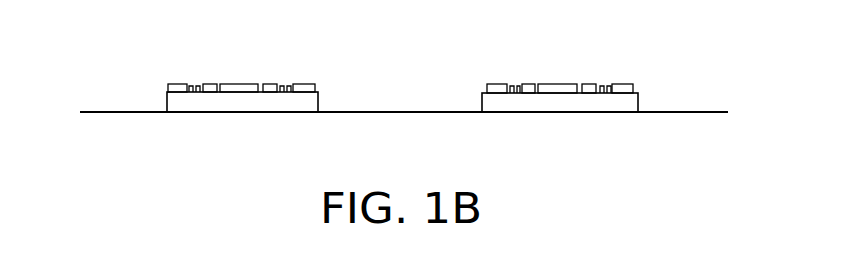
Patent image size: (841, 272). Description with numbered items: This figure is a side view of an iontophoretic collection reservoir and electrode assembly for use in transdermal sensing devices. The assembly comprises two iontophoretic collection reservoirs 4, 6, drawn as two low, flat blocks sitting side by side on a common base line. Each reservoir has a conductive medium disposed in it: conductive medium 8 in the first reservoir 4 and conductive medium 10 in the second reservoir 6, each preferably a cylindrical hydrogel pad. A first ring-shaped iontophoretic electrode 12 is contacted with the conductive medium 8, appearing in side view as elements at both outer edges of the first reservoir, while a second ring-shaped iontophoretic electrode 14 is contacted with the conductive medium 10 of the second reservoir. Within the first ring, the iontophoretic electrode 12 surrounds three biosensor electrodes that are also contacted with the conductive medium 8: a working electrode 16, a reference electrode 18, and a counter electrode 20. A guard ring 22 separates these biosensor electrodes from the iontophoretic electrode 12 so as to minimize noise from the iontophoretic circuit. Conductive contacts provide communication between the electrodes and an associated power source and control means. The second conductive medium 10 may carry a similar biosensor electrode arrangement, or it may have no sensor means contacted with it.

The iontophoretic collection reservoir 4 is at (318, 103).
The iontophoretic collection reservoir 6 is at (482, 97).
The conductive medium 8 is at (185, 103).
The conductive medium 10 is at (630, 100).
The first iontophoretic electrode 12 is at (173, 84).
The second iontophoretic electrode 14 is at (622, 84).
The working electrode 16 is at (243, 84).
The reference electrode 18 is at (207, 84).
The counter electrode 20 is at (270, 84).
The guard ring 22 is at (190, 84).